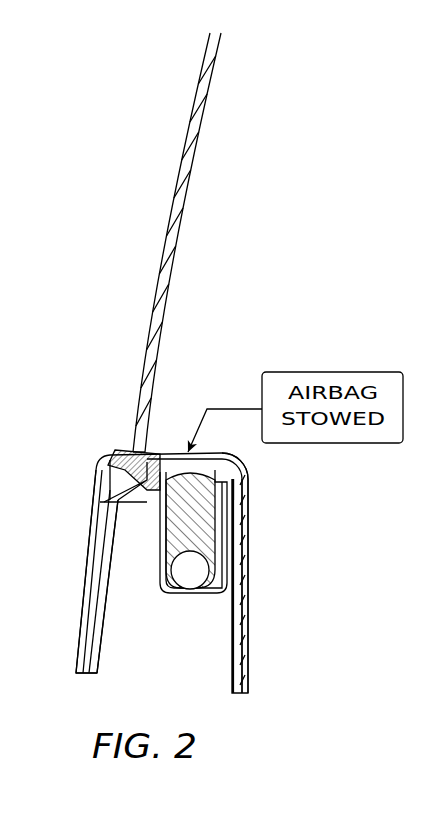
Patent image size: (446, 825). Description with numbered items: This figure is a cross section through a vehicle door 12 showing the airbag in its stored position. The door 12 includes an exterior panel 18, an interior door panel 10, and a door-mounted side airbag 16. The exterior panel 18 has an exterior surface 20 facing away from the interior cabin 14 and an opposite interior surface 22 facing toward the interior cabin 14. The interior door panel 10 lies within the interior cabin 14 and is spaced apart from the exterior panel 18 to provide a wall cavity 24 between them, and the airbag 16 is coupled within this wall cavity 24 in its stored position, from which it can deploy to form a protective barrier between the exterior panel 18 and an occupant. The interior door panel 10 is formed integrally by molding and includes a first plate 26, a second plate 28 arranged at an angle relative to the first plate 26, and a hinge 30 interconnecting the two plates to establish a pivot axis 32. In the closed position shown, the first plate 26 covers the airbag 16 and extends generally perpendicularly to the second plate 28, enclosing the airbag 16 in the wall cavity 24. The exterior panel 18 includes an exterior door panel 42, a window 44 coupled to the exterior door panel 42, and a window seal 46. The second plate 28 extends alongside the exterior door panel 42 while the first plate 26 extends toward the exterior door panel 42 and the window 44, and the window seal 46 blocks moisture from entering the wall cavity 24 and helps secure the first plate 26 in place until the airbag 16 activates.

The interior door panel 10 is at (203, 523).
The door 12 is at (283, 486).
The interior cabin 14 is at (260, 316).
The airbag 16 is at (183, 600).
The exterior panel 18 is at (84, 578).
The exterior surface 20 is at (77, 640).
The interior surface 22 is at (100, 628).
The wall cavity 24 is at (118, 660).
The first plate 26 is at (170, 452).
The second plate 28 is at (252, 583).
The hinge 30 is at (252, 470).
The pivot axis 32 is at (246, 478).
The exterior door panel 42 is at (86, 493).
The window 44 is at (155, 208).
The window seal 46 is at (123, 440).